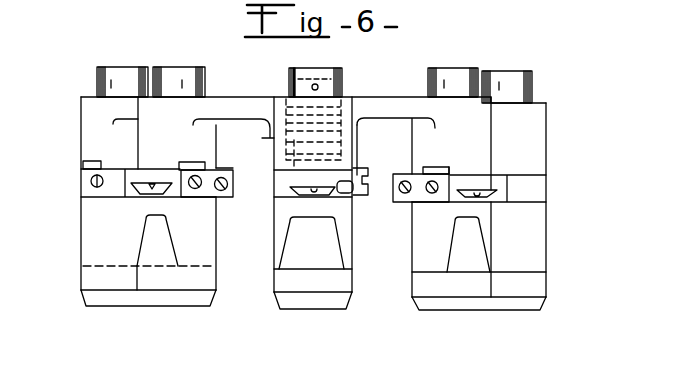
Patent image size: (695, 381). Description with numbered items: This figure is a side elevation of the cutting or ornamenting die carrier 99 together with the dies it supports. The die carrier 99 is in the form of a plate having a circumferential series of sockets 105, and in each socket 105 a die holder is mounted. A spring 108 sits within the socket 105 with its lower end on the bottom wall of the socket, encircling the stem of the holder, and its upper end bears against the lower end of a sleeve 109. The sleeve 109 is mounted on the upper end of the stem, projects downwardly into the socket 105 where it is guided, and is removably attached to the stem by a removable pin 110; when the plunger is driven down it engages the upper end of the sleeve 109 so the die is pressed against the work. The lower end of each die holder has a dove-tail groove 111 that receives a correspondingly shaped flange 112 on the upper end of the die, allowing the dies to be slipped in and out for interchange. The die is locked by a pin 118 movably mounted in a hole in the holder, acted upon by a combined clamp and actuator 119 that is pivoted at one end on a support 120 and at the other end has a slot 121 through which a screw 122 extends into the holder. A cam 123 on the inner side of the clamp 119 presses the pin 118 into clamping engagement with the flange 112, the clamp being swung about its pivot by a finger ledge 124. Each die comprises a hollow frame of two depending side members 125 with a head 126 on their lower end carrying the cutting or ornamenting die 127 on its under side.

The die carrier 99 is at (232, 99).
The socket 105 is at (505, 115).
The spring 108 is at (345, 99).
The sleeve 109 is at (170, 78).
The removable pin 110 is at (317, 85).
The dove-tail groove 111 is at (151, 189).
The flange 112 is at (129, 196).
The pin 118 is at (349, 202).
The combined clamp and actuator 119 is at (426, 277).
The support 120 is at (226, 197).
The slot 121 is at (89, 170).
The screw 122 is at (93, 185).
The cam 123 is at (182, 182).
The finger ledge 124 is at (88, 162).
The side members 125 is at (112, 245).
The head 126 is at (112, 278).
The cutting or ornamenting die 127 is at (100, 297).